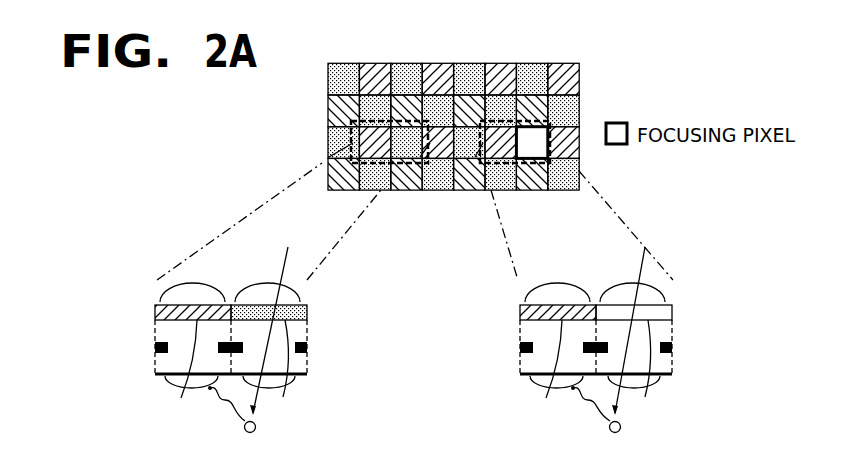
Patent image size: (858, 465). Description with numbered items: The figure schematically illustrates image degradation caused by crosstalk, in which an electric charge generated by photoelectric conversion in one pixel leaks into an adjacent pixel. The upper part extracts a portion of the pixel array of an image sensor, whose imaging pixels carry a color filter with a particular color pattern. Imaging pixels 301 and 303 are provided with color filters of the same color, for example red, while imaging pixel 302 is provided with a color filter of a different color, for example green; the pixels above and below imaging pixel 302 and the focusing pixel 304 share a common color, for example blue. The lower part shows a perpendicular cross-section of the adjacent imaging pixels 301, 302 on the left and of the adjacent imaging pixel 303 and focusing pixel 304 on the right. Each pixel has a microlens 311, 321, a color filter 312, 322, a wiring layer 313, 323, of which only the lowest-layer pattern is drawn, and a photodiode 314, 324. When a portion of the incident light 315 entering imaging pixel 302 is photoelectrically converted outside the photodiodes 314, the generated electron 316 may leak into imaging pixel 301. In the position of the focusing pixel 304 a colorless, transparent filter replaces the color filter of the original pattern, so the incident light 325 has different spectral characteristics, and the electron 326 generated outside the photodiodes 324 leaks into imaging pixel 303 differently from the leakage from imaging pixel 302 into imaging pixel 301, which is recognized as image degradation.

The imaging pixel 301 is at (370, 120).
The imaging pixel 302 is at (403, 138).
The imaging pixel 303 is at (505, 128).
The focusing pixel 304 is at (533, 132).
The microlens 311 is at (312, 282).
The color filter 312 is at (312, 305).
The wiring layer 313 is at (312, 338).
The photodiode 314 is at (312, 372).
The incident light 315 is at (288, 247).
The electron 316 is at (256, 430).
The microlens 321 is at (677, 282).
The color filter 322 is at (677, 305).
The wiring layer 323 is at (677, 338).
The photodiode 324 is at (677, 372).
The incident light 325 is at (638, 268).
The electron 326 is at (621, 430).